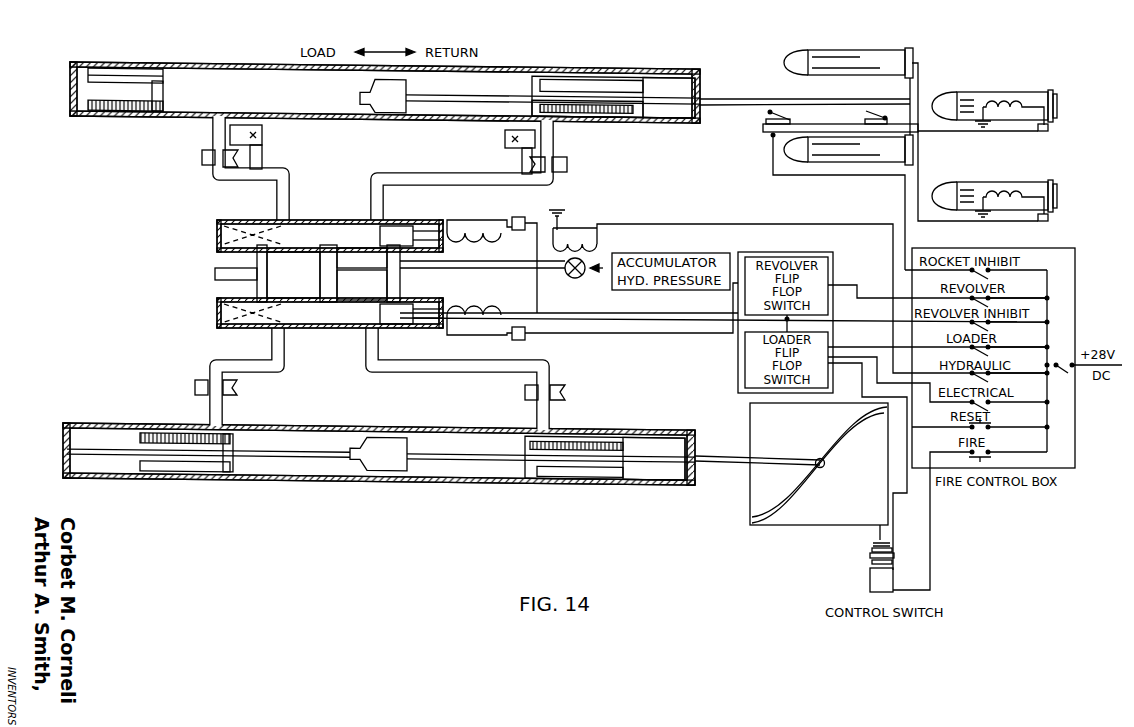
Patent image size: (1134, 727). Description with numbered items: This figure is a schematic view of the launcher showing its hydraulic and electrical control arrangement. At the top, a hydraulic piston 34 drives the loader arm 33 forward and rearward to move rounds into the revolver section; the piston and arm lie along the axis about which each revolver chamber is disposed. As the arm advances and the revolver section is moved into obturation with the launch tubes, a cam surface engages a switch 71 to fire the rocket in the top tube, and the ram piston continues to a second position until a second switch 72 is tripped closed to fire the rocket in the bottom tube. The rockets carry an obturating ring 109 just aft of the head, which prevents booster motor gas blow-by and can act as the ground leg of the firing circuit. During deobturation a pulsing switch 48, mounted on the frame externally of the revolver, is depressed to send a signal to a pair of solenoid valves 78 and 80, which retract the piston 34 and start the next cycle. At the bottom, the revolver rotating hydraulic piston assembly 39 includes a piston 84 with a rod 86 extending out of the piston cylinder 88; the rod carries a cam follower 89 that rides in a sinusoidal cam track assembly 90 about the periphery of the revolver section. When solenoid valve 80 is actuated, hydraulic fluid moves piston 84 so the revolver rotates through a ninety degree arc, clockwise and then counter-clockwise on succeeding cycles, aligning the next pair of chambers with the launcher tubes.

The loader arm 33 is at (713, 90).
The hydraulic piston 34 is at (376, 115).
The revolver rotating hydraulic piston assembly 39 is at (379, 478).
The pulsing switch 48 is at (866, 580).
The switch 71 is at (868, 110).
The second switch 72 is at (768, 116).
The solenoid valve 78 is at (476, 221).
The solenoid valve 80 is at (463, 328).
The piston 84 is at (376, 477).
The rod 86 is at (724, 467).
The piston cylinder 88 is at (379, 473).
The cam follower 89 is at (825, 467).
The sinusoidal cam track assembly 90 is at (842, 449).
The obturating ring 109 is at (978, 98).